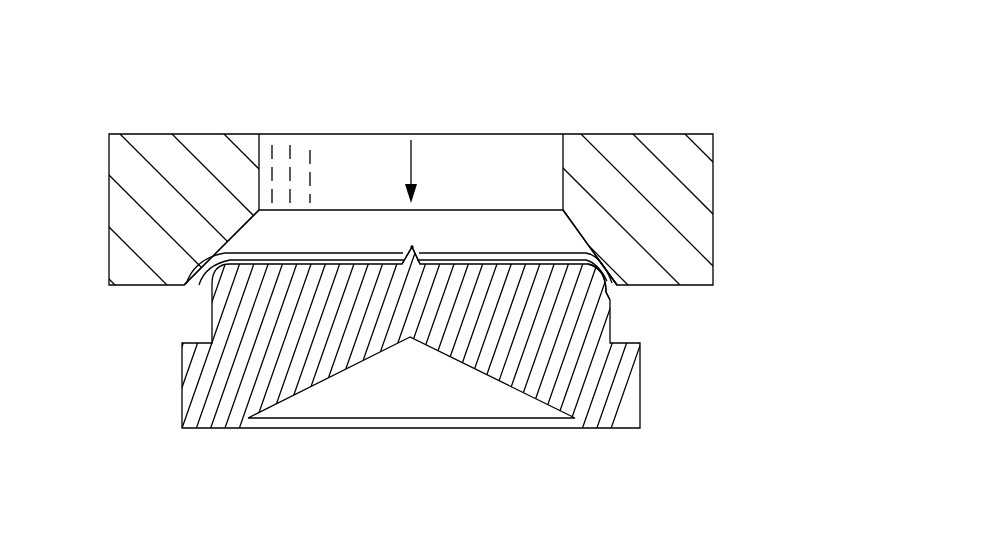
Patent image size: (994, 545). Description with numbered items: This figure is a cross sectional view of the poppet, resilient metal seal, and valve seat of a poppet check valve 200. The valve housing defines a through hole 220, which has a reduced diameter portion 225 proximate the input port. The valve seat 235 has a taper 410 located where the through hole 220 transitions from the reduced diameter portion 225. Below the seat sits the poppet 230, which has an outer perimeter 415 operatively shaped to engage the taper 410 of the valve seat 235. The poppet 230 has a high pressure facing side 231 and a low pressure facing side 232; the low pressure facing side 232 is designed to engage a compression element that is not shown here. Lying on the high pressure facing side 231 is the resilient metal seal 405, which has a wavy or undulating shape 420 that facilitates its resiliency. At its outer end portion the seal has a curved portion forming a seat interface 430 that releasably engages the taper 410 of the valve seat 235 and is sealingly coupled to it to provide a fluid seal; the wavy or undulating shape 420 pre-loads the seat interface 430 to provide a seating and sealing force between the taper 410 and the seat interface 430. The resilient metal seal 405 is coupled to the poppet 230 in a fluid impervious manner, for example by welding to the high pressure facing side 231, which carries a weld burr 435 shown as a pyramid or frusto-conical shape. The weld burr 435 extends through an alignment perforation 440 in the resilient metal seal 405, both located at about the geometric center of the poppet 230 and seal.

The poppet check valve 200 is at (744, 159).
The through hole 220 is at (411, 151).
The reduced diameter portion 225 is at (518, 177).
The poppet 230 is at (232, 307).
The high pressure facing side 231 is at (563, 170).
The low pressure facing side 232 is at (556, 356).
The valve seat 235 is at (236, 233).
The resilient metal seal 405 is at (591, 232).
The taper 410 is at (245, 228).
The outer perimeter 415 is at (598, 282).
The wavy or undulating shape 420 is at (340, 250).
The seat interface 430 is at (617, 272).
The weld burr 435 is at (396, 278).
The alignment perforation 440 is at (419, 262).